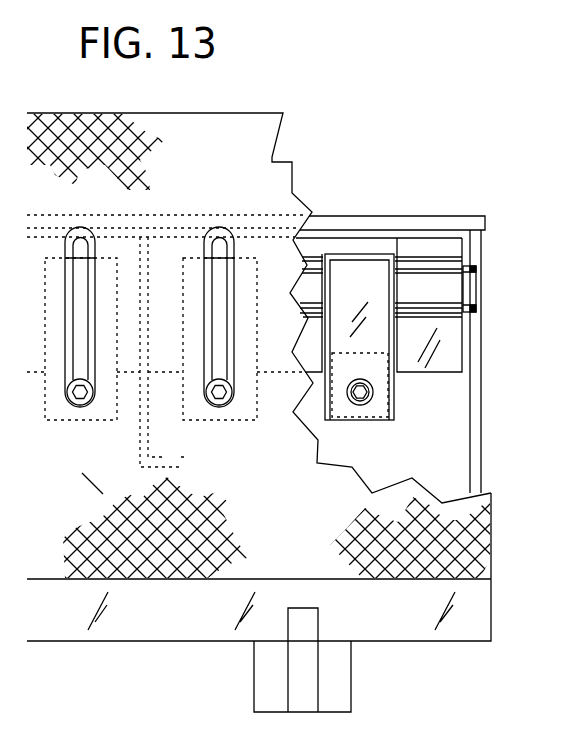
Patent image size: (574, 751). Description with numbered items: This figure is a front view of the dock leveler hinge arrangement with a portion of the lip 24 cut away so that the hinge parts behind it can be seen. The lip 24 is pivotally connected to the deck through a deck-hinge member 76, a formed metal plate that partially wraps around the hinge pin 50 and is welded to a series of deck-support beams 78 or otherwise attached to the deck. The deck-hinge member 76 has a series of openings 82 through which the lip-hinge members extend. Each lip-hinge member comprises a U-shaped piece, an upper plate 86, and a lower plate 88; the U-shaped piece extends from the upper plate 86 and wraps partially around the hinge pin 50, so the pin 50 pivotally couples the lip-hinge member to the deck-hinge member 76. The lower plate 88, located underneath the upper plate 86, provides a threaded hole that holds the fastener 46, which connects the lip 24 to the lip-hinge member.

The lip 24 is at (494, 553).
The fastener 46 is at (374, 391).
The hinge pin 50 is at (477, 288).
The deck-hinge member 76 is at (449, 372).
The deck-support beams 78 is at (165, 457).
The openings 82 is at (388, 291).
The upper plate 86 is at (346, 268).
The lower plate 88 is at (357, 420).